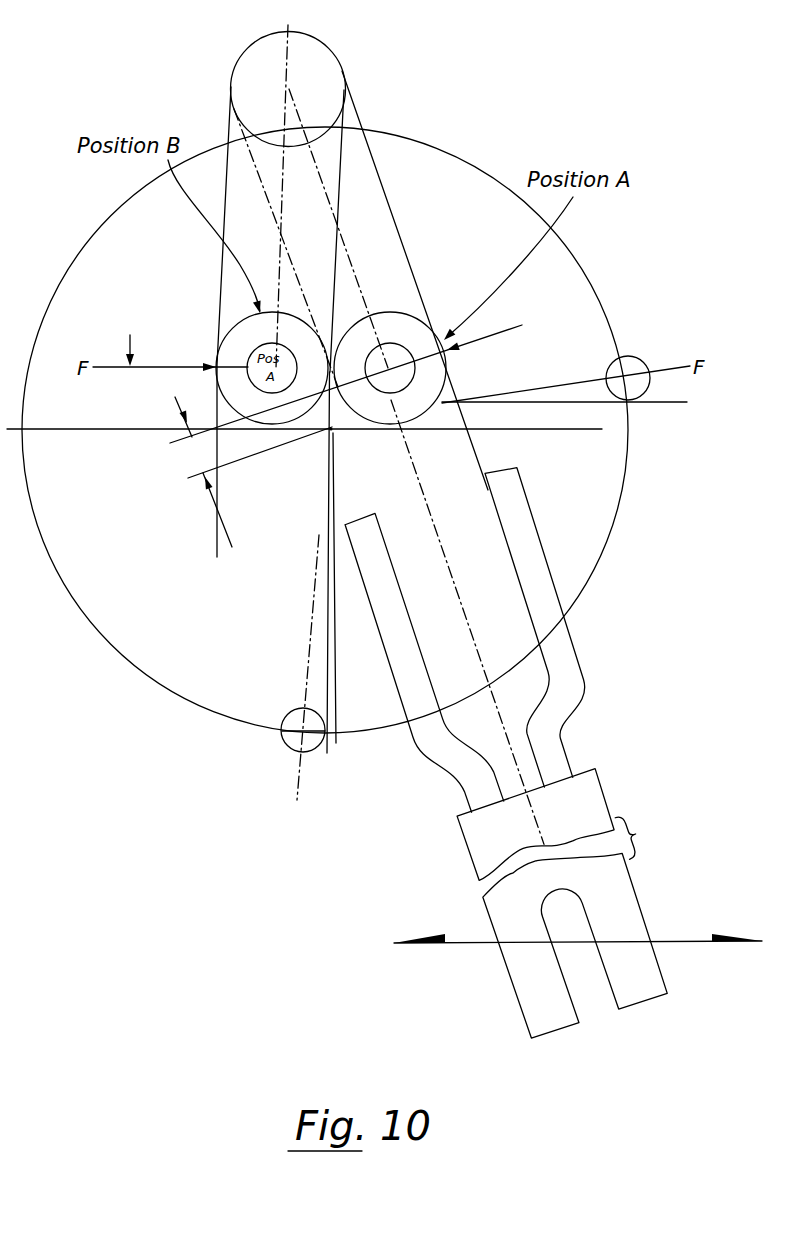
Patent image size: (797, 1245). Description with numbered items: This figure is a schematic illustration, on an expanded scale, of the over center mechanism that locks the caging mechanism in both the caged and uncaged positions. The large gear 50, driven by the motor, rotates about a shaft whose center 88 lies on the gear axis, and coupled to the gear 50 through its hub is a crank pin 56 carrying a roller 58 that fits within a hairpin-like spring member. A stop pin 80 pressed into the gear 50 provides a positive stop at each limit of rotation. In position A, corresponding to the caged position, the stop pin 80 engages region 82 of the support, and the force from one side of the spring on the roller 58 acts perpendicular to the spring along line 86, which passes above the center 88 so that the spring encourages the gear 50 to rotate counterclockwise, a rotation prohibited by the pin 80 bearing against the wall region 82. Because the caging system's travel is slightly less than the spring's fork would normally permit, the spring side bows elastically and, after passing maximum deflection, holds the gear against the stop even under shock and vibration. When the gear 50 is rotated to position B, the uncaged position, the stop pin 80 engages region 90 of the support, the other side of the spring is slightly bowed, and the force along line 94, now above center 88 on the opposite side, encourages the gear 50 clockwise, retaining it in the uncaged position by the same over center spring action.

The gear 50 is at (117, 636).
The crank pin 56 is at (390, 352).
The roller 58 is at (447, 379).
The stop pin 80 is at (650, 385).
The region of the support 82 is at (325, 685).
The line of force 86 is at (219, 423).
The center of shaft 88 is at (332, 431).
The region of the support 90 is at (648, 403).
The line of force 94 is at (105, 366).